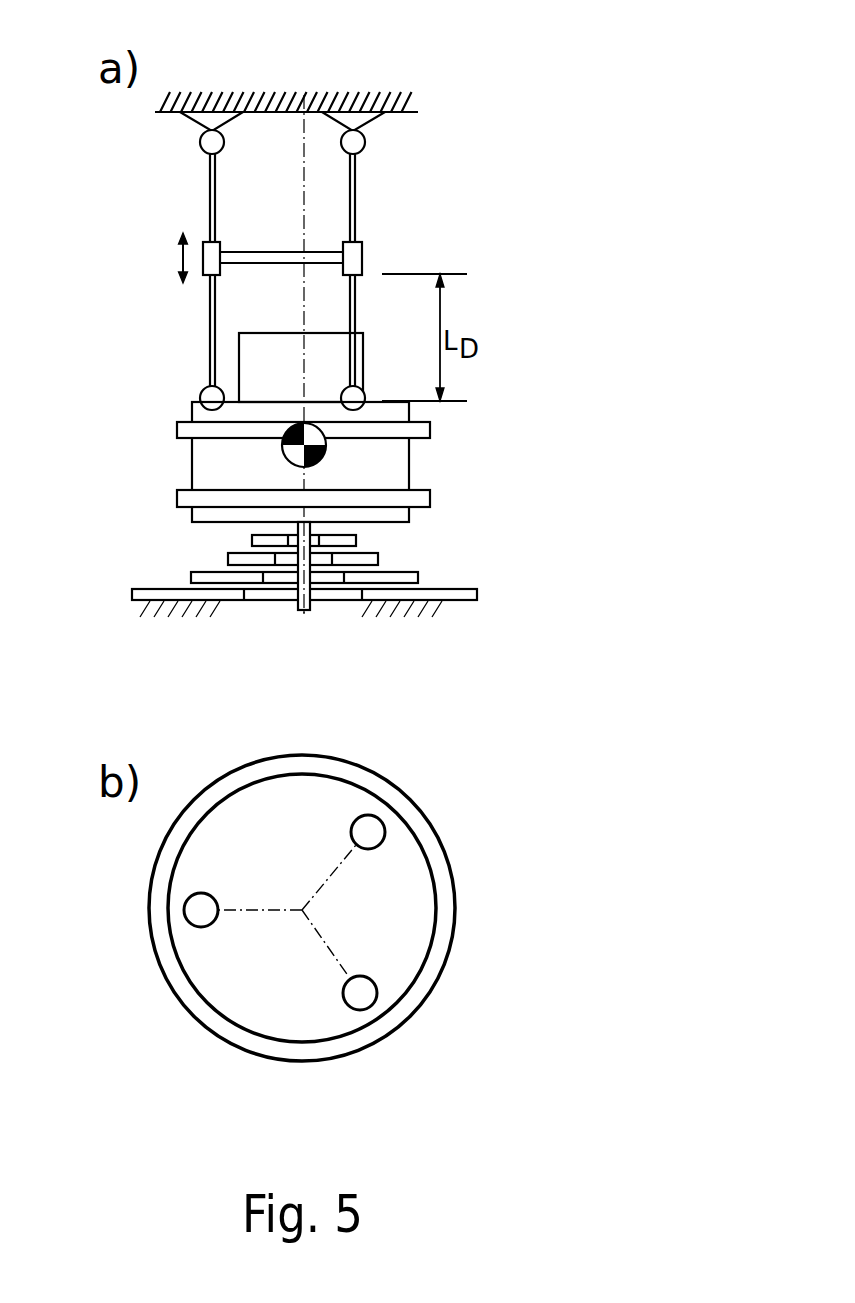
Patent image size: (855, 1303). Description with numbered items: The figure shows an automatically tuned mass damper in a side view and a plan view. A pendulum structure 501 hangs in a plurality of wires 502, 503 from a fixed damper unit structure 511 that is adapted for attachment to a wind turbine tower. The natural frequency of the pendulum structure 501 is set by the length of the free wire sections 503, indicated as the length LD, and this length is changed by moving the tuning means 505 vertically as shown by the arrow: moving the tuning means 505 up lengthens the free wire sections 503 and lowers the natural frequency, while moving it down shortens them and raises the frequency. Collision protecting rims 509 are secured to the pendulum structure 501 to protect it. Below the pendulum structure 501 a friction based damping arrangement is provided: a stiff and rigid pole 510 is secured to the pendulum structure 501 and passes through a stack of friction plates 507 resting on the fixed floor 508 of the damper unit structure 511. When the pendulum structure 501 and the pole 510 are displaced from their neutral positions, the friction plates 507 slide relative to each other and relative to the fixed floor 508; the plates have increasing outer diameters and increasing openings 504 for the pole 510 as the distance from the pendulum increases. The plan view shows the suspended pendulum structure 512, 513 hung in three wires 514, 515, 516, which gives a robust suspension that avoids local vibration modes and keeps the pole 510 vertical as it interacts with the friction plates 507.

The pendulum structure 501 is at (398, 463).
The wires 502 is at (208, 203).
The free wire sections 503 is at (208, 332).
The openings 504 is at (285, 577).
The tuning means 505 is at (283, 252).
The friction plates 507 is at (455, 566).
The fixed floor 508 is at (442, 607).
The collision protecting rims 509 is at (177, 502).
The pole 510 is at (308, 605).
The damper unit structure 511 is at (405, 100).
The suspended pendulum structure 512 is at (407, 883).
The suspended pendulum structure 513 is at (443, 932).
The wire 514 is at (192, 912).
The wire 515 is at (373, 827).
The wire 516 is at (365, 997).